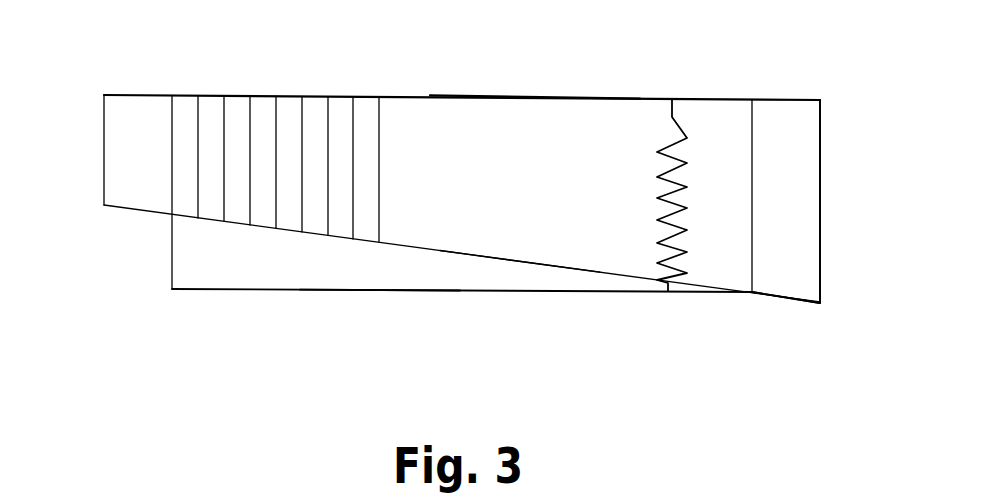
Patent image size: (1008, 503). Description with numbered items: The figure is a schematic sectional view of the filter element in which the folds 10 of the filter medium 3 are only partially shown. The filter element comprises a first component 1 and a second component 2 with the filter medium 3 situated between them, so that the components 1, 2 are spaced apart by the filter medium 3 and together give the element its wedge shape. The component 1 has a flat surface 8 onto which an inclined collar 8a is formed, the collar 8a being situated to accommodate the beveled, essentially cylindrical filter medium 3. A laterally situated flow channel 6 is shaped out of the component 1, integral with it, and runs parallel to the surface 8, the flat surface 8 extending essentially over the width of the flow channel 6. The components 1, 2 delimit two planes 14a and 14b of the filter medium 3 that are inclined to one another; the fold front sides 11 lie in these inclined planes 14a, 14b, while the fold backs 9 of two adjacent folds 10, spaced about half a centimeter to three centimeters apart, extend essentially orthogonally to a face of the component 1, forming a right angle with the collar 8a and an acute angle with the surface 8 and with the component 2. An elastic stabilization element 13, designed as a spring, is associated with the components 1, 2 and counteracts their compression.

The first component 1 is at (228, 290).
The second component 2 is at (413, 97).
The filter medium 3 is at (124, 150).
The flow channel 6 is at (180, 253).
The surface 8 is at (392, 276).
The collar 8a is at (787, 293).
The fold backs 9 is at (200, 133).
The folds 10 is at (352, 155).
The fold front sides 11 is at (247, 225).
The stabilization element 13 is at (682, 253).
The plane 14a is at (508, 265).
The plane 14b is at (515, 97).